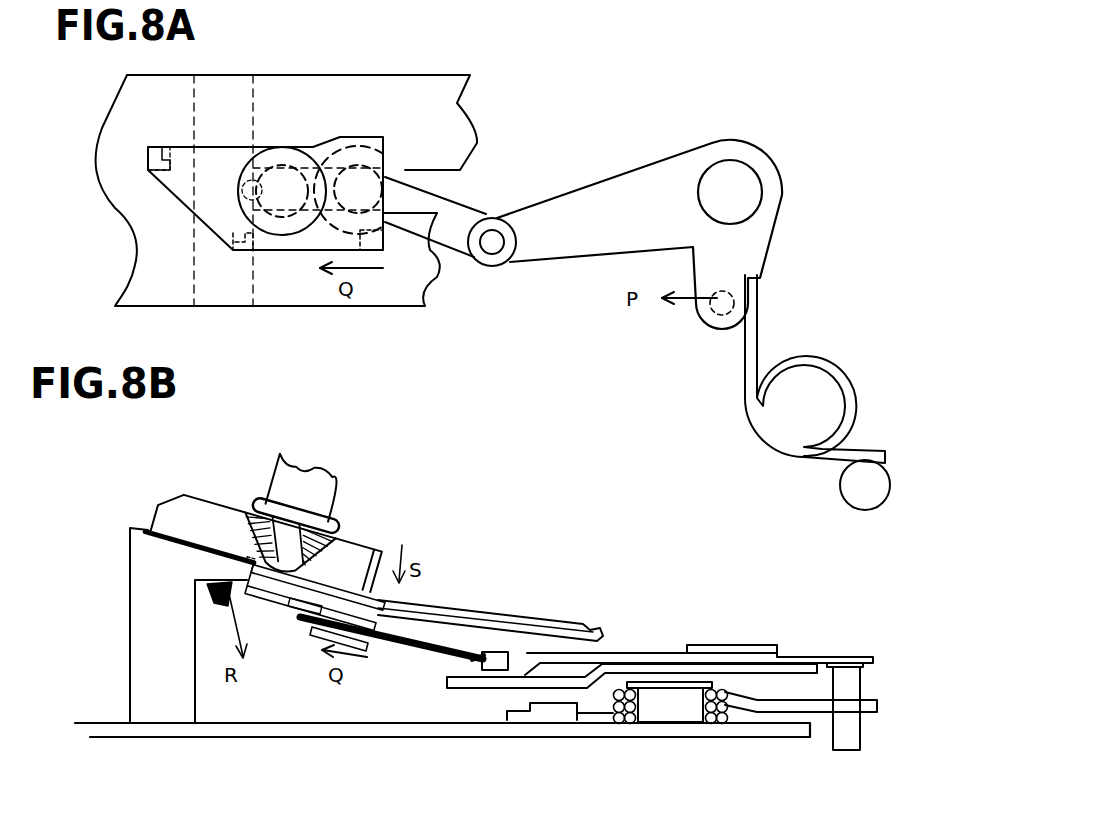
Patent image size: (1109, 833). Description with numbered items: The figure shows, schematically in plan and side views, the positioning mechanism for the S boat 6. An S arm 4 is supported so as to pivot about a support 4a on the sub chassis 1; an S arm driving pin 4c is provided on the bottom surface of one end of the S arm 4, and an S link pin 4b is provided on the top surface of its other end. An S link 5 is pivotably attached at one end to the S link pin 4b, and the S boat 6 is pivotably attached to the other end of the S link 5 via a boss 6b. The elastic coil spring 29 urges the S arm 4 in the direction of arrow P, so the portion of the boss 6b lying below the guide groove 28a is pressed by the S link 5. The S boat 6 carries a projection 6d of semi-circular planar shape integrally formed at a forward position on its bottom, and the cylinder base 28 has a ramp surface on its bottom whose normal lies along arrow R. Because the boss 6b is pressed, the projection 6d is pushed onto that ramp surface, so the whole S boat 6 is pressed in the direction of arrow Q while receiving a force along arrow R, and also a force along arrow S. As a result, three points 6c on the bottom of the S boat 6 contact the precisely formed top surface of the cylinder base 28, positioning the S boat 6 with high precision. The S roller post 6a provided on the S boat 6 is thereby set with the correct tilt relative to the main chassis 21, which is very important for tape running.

In FIG. 8B, the sub chassis 1 is at (481, 662).
In FIG. 8A, the S arm 4 is at (615, 200).
In FIG. 8B, the S arm 4 is at (628, 653).
In FIG. 8A, the support 4a is at (730, 187).
In FIG. 8B, the support 4a is at (737, 646).
In FIG. 8A, the S link pin 4b is at (492, 242).
In FIG. 8B, the S link pin 4b is at (501, 660).
In FIG. 8A, the S arm driving pin 4c is at (717, 320).
In FIG. 8B, the S arm driving pin 4c is at (848, 684).
In FIG. 8A, the S link 5 is at (465, 227).
In FIG. 8B, the S link 5 is at (410, 647).
In FIG. 8A, the S boat 6 is at (347, 142).
In FIG. 8B, the S boat 6 is at (202, 520).
In FIG. 8A, the S roller post 6a is at (293, 190).
In FIG. 8B, the S roller post 6a is at (330, 495).
In FIG. 8B, the boss 6b is at (380, 601).
In FIG. 8A, the three points 6c is at (158, 152).
In FIG. 8B, the three points 6c is at (172, 530).
In FIG. 8B, the projection 6d is at (222, 600).
In FIG. 8B, the main chassis 21 is at (779, 730).
In FIG. 8A, the cylinder base 28 is at (420, 95).
In FIG. 8B, the cylinder base 28 is at (147, 607).
In FIG. 8B, the guide groove 28a is at (473, 628).
In FIG. 8A, the elastic coil spring 29 is at (753, 343).
In FIG. 8B, the elastic coil spring 29 is at (868, 712).